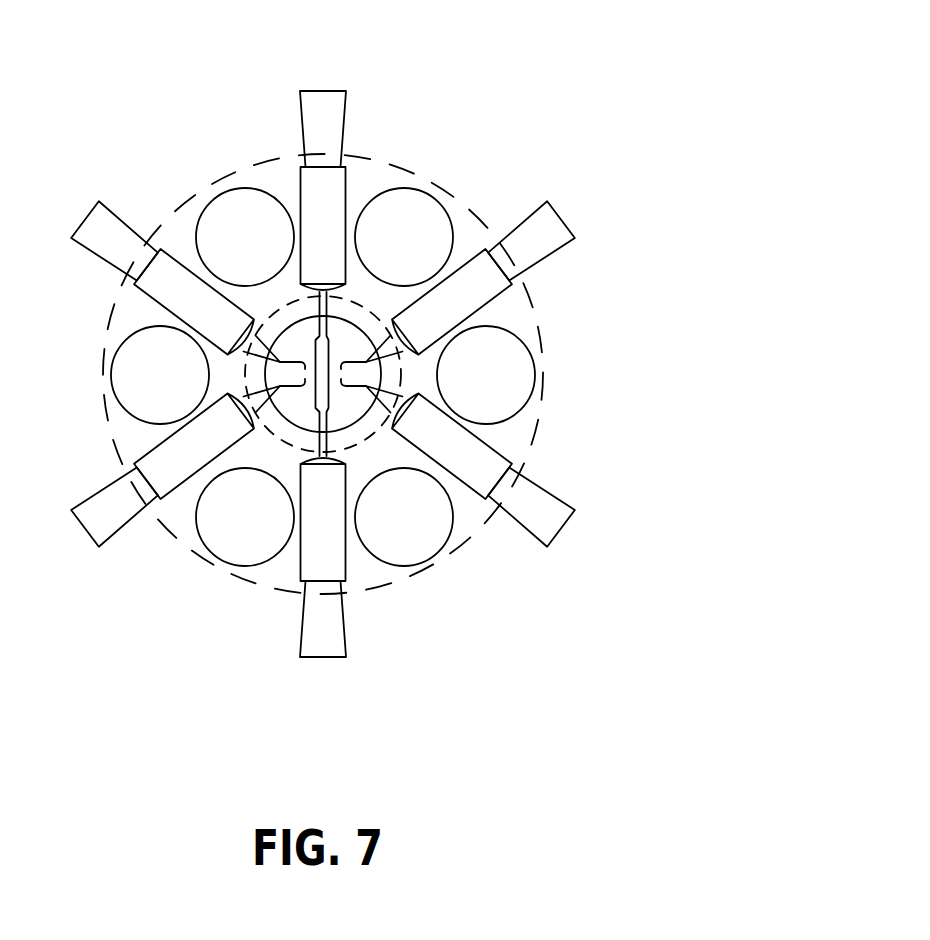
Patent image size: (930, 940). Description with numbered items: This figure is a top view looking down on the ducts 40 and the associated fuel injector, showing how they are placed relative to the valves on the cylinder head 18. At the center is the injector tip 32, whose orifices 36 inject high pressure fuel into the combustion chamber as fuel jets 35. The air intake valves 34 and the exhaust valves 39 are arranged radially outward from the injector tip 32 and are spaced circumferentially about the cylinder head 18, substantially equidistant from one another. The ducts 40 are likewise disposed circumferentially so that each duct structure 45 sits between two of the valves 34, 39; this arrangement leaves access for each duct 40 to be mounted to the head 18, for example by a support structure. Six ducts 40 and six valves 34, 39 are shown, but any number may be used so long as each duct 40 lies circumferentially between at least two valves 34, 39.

The cylinder head 18 is at (416, 354).
The injector tip 32 is at (343, 350).
The air intake valves 34 is at (235, 228).
The fuel jets 35 is at (322, 117).
The orifices 36 is at (323, 374).
The exhaust valves 39 is at (398, 213).
The ducts 40 is at (447, 193).
The duct structure 45 is at (305, 168).